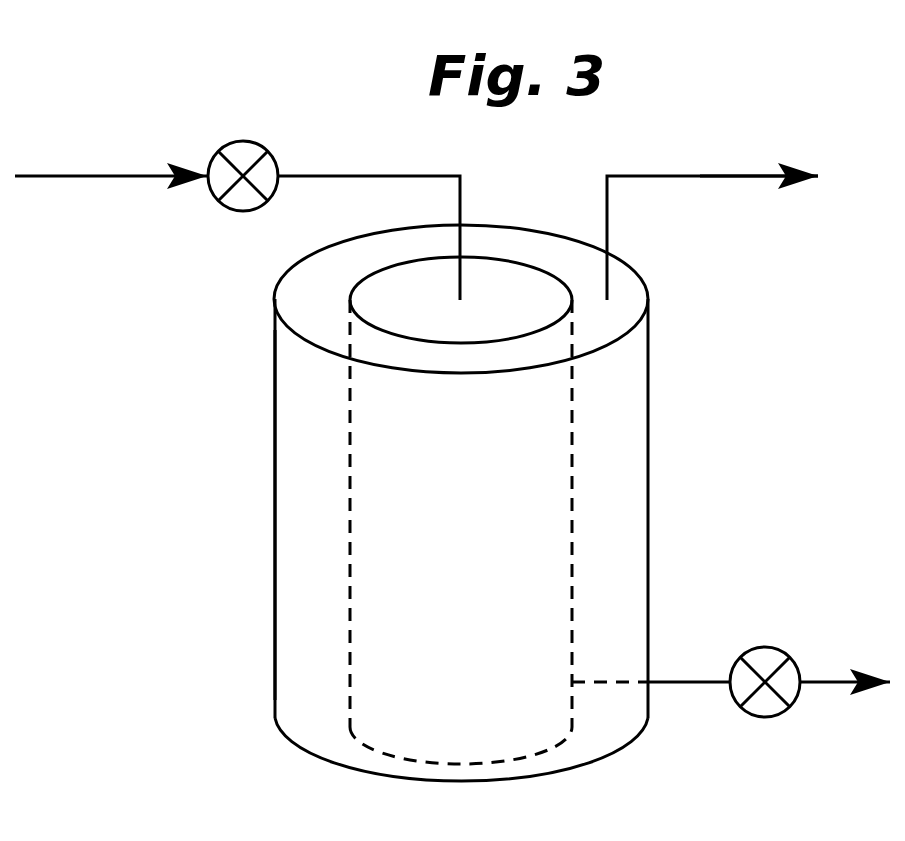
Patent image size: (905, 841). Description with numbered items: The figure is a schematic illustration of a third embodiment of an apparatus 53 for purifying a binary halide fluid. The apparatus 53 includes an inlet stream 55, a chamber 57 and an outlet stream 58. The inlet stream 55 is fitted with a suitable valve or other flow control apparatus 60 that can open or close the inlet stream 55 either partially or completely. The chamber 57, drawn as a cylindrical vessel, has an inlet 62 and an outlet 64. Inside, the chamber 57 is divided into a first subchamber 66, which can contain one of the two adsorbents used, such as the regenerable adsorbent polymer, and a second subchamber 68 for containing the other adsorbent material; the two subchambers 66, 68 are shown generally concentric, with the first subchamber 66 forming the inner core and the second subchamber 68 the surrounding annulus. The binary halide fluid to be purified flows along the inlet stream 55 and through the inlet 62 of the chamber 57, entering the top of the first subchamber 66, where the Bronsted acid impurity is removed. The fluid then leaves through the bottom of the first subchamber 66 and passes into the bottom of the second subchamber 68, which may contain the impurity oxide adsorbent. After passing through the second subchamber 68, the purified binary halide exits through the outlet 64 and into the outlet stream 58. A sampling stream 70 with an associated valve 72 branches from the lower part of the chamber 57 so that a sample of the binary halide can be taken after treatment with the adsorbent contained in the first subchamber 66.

The apparatus 53 is at (498, 503).
The inlet stream 55 is at (112, 176).
The chamber 57 is at (654, 527).
The outlet stream 58 is at (708, 176).
The valve or flow control apparatus 60 is at (248, 145).
The inlet 62 is at (452, 292).
The outlet 64 is at (618, 293).
The first subchamber 66 is at (560, 412).
The second subchamber 68 is at (270, 480).
The sampling stream 70 is at (678, 684).
The valve 72 is at (765, 652).